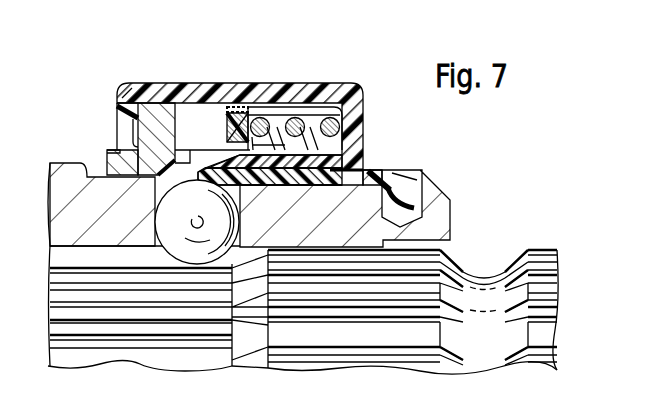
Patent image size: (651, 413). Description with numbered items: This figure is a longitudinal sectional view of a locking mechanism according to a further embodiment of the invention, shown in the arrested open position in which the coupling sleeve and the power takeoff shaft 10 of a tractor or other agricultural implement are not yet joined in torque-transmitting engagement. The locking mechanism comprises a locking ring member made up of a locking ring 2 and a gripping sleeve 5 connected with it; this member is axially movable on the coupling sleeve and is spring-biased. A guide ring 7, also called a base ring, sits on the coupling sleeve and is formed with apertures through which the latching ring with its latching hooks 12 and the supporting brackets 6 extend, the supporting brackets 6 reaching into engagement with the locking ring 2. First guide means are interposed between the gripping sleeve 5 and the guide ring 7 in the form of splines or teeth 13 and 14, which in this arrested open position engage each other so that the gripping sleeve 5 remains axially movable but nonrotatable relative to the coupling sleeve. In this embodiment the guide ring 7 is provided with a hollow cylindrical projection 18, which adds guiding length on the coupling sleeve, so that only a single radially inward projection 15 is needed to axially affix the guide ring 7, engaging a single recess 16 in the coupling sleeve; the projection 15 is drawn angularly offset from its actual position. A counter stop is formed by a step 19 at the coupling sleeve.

The locking ring 2 is at (110, 150).
The gripping sleeve 5 is at (254, 93).
The supporting brackets 6 is at (184, 160).
The guide ring 7 is at (224, 150).
The power takeoff shaft 10 is at (544, 252).
The latching hooks 12 is at (278, 118).
The teeth 13 is at (238, 107).
The teeth 14 is at (308, 105).
The projection 15 is at (409, 196).
The recess 16 is at (392, 208).
The cylindrical projection 18 is at (375, 168).
The step 19 is at (253, 198).